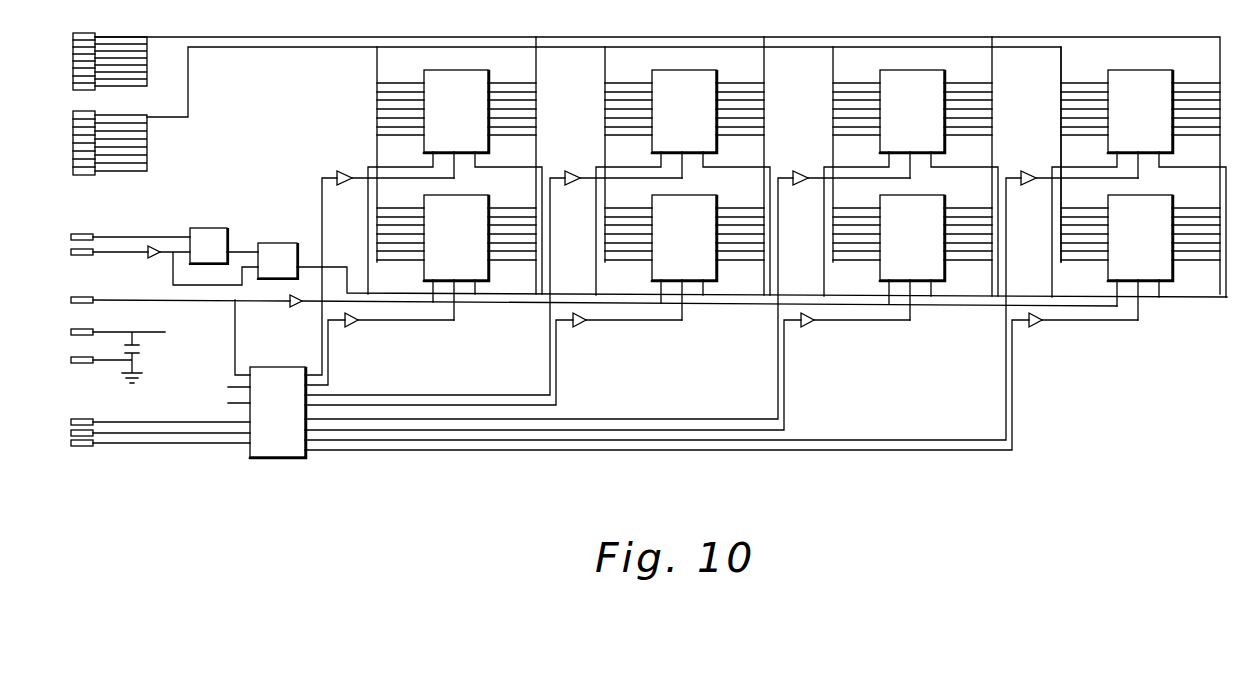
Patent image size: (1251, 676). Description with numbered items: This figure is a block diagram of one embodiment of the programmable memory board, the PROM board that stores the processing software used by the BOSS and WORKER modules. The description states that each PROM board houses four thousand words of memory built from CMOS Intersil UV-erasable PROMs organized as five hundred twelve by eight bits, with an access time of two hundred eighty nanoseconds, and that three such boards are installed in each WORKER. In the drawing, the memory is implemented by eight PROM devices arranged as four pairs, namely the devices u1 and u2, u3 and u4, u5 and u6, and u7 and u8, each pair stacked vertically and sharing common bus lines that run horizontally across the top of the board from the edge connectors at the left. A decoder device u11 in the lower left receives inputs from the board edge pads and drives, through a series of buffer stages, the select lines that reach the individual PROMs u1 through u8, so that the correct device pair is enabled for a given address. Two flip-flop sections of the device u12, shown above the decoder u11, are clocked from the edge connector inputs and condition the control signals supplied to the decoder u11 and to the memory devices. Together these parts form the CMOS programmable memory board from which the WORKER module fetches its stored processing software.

The IM 6604 memory chip u1 is at (455, 182).
The IM 6604 memory chip u2 is at (456, 257).
The IM 6604 memory chip u3 is at (683, 182).
The IM 6604 memory chip u4 is at (684, 257).
The IM 6604 memory chip u5 is at (911, 183).
The IM 6604 memory chip u6 is at (912, 257).
The IM 6604 memory chip u7 is at (1139, 183).
The IM 6604 memory chip u8 is at (1140, 257).
The 1853 decoder u11 is at (278, 412).
The 4013 flip-flop u12 is at (244, 253).